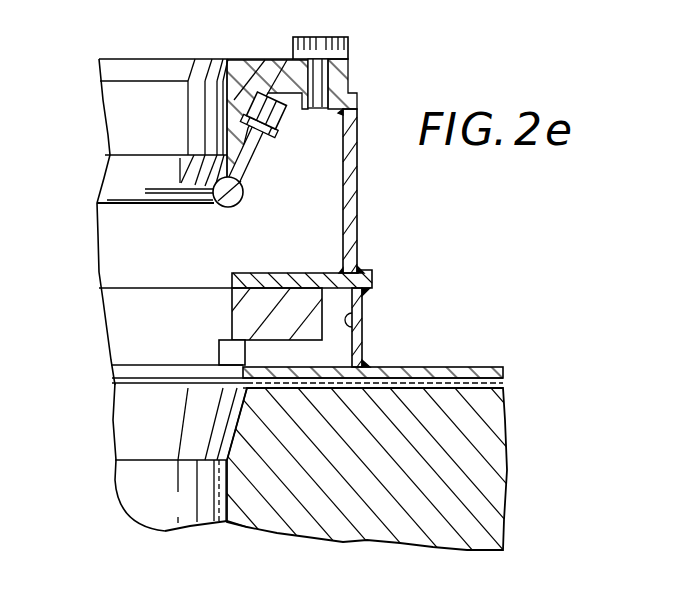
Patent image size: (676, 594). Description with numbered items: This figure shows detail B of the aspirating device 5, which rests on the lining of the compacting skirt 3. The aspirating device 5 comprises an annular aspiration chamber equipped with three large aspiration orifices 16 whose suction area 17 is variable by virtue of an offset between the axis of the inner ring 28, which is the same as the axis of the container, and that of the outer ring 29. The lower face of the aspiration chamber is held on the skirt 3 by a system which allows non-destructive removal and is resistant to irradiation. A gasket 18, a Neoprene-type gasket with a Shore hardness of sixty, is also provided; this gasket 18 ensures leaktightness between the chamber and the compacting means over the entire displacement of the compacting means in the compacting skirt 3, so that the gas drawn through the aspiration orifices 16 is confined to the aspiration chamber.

The compacting skirt 3 is at (239, 490).
The aspirating device 5 is at (372, 217).
The large aspiration orifices 16 is at (153, 258).
The suction area 17 is at (337, 355).
The gasket 18 is at (255, 167).
The inner ring 28 is at (206, 344).
The outer ring 29 is at (363, 329).